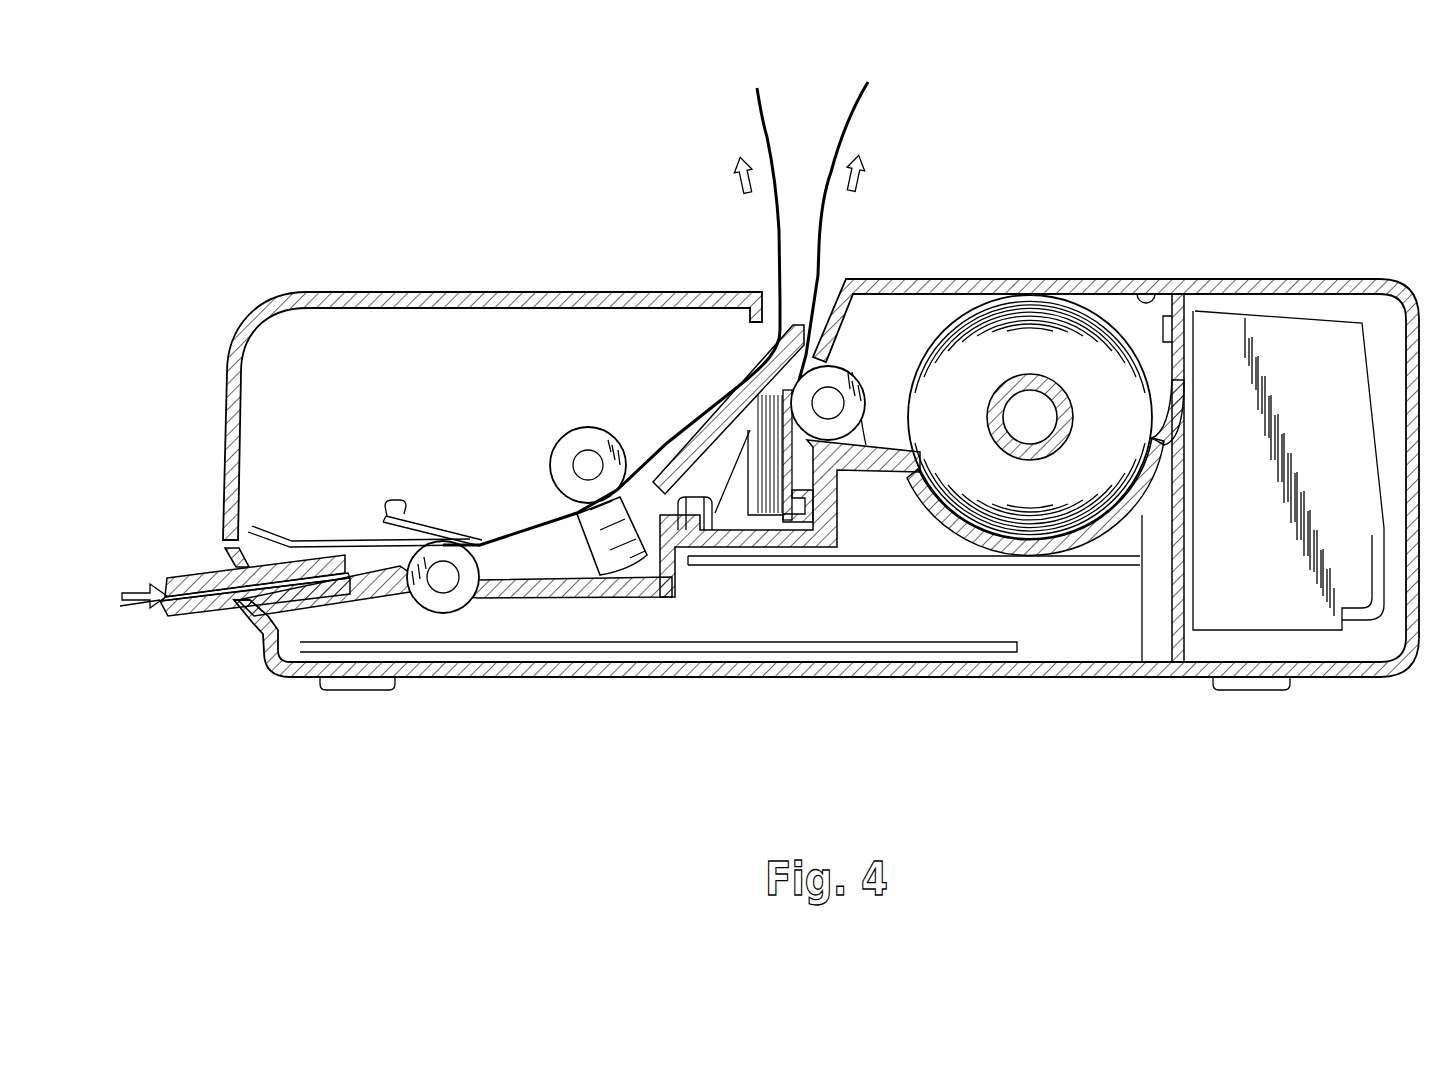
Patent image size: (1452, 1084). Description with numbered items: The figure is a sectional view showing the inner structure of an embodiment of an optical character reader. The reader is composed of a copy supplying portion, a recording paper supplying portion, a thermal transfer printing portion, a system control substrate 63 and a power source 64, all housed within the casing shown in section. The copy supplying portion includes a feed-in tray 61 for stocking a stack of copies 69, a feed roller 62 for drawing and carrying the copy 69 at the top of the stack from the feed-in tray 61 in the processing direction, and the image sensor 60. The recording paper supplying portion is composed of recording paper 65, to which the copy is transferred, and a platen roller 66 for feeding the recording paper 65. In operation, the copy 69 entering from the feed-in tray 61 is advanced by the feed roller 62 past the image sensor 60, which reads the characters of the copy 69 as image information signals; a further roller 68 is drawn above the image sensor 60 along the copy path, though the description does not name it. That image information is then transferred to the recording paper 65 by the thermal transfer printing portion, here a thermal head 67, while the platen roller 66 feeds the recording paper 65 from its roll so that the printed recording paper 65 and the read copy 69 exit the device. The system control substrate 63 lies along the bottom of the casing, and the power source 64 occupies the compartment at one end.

The image sensor 60 is at (580, 549).
The feed-in tray 61 is at (210, 612).
The feed roller 62 is at (480, 598).
The system control substrate 63 is at (946, 642).
The power source 64 is at (1290, 360).
The recording paper 65 is at (864, 112).
The platen roller 66 is at (838, 366).
The thermal head 67 is at (752, 478).
The pressure roller 68 is at (590, 440).
The copy 69 is at (757, 110).